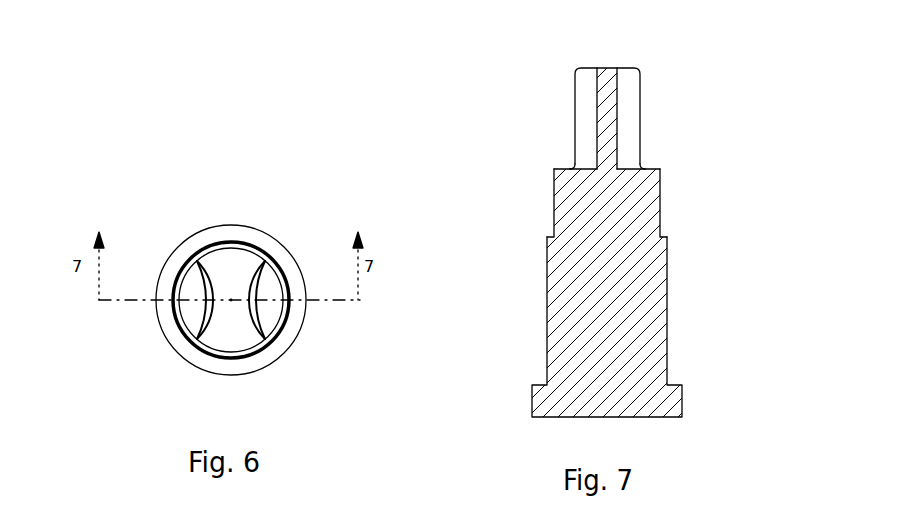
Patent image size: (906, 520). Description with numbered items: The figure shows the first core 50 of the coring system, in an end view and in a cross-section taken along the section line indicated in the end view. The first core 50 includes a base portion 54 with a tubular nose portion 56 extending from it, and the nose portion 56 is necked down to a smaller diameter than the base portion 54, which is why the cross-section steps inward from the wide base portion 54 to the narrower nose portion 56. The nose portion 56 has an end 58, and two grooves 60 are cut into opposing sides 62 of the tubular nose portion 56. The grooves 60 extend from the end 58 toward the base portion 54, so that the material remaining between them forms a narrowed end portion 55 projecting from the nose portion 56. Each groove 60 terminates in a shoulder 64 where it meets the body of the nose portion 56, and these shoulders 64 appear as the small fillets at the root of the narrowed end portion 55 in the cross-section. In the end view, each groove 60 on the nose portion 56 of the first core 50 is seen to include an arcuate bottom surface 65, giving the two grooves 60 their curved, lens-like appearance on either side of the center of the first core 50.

In FIG. 6, the first core 50 is at (148, 212).
In FIG. 7, the first core 50 is at (473, 123).
In FIG. 6, the base portion 54 is at (250, 358).
In FIG. 7, the base portion 54 is at (668, 308).
In FIG. 7, the narrowed end portion 55 is at (640, 120).
In FIG. 6, the tubular nose portion 56 is at (230, 247).
In FIG. 7, the tubular nose portion 56 is at (647, 190).
In FIG. 6, the end 58 is at (230, 330).
In FIG. 7, the end 58 is at (607, 67).
In FIG. 7, the grooves 60 is at (583, 100).
In FIG. 7, the opposing sides 62 is at (555, 203).
In FIG. 6, the shoulder 64 is at (190, 317).
In FIG. 7, the shoulder 64 is at (565, 167).
In FIG. 6, the arcuate bottom surface 65 is at (208, 294).